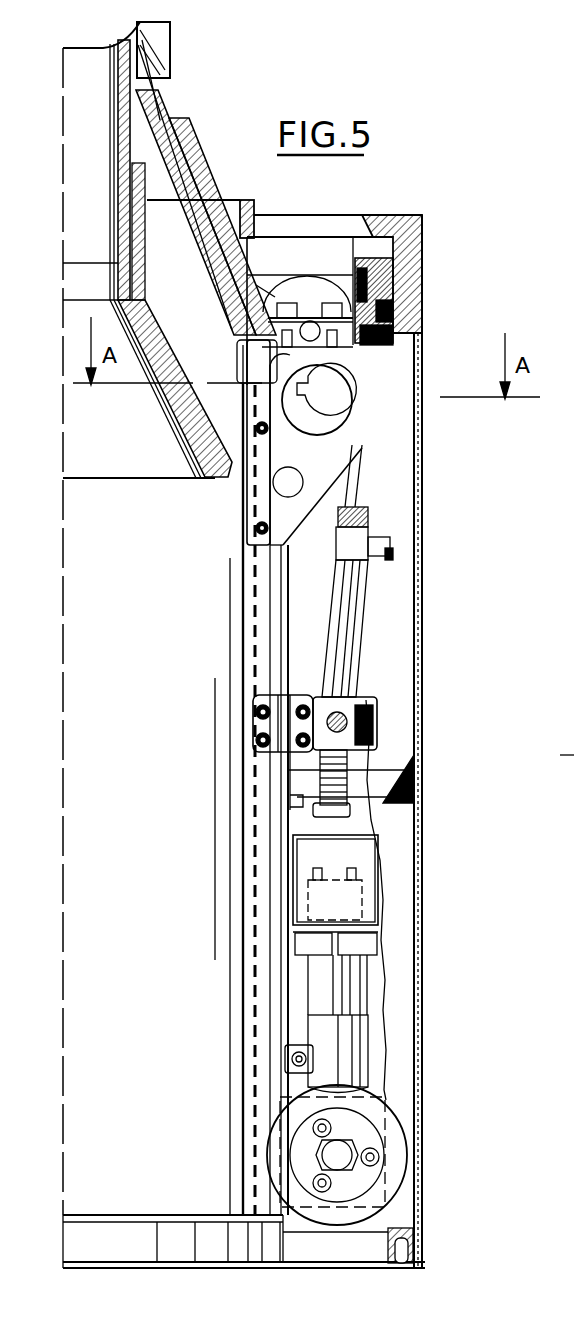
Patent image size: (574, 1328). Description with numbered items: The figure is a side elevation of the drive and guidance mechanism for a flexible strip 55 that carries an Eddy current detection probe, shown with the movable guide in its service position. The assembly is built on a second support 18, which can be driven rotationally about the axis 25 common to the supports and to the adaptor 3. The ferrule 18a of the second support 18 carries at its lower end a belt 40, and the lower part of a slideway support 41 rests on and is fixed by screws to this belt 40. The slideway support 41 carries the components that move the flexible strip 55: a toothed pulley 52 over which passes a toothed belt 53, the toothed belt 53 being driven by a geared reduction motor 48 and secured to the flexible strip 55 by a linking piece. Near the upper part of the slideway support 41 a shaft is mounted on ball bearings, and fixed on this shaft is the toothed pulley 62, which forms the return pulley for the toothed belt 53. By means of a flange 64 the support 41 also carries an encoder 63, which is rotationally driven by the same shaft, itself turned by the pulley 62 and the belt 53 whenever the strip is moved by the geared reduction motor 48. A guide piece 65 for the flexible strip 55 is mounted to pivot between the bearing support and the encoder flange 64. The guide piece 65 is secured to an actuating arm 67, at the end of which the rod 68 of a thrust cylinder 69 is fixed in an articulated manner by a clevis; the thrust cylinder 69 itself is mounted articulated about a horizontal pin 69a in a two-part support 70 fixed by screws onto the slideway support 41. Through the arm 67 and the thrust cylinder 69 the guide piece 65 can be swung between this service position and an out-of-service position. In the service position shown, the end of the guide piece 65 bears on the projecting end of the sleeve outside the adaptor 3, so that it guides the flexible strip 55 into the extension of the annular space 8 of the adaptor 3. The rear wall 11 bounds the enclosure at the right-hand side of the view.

The adaptor 3 is at (162, 43).
The annular space 8 is at (137, 52).
The flexible strip 55 is at (170, 177).
The guide piece 65 is at (192, 190).
The actuating arm 67 is at (262, 268).
The encoder 63 is at (367, 398).
The toothed pulley 62 is at (327, 418).
The rod 68 is at (368, 465).
The flange 64 is at (260, 505).
The axis 25 is at (65, 535).
The thrust cylinder 69 is at (352, 605).
The horizontal pin 69a is at (365, 732).
The two-part support 70 is at (258, 718).
The slideway support 41 is at (253, 845).
The rear wall 11 is at (418, 873).
The ferrule 18a is at (166, 967).
The second support 18 is at (232, 999).
The toothed belt 53 is at (382, 1010).
The geared reduction motor 48 is at (365, 1030).
The toothed pulley 52 is at (355, 1118).
The belt 40 is at (187, 1233).